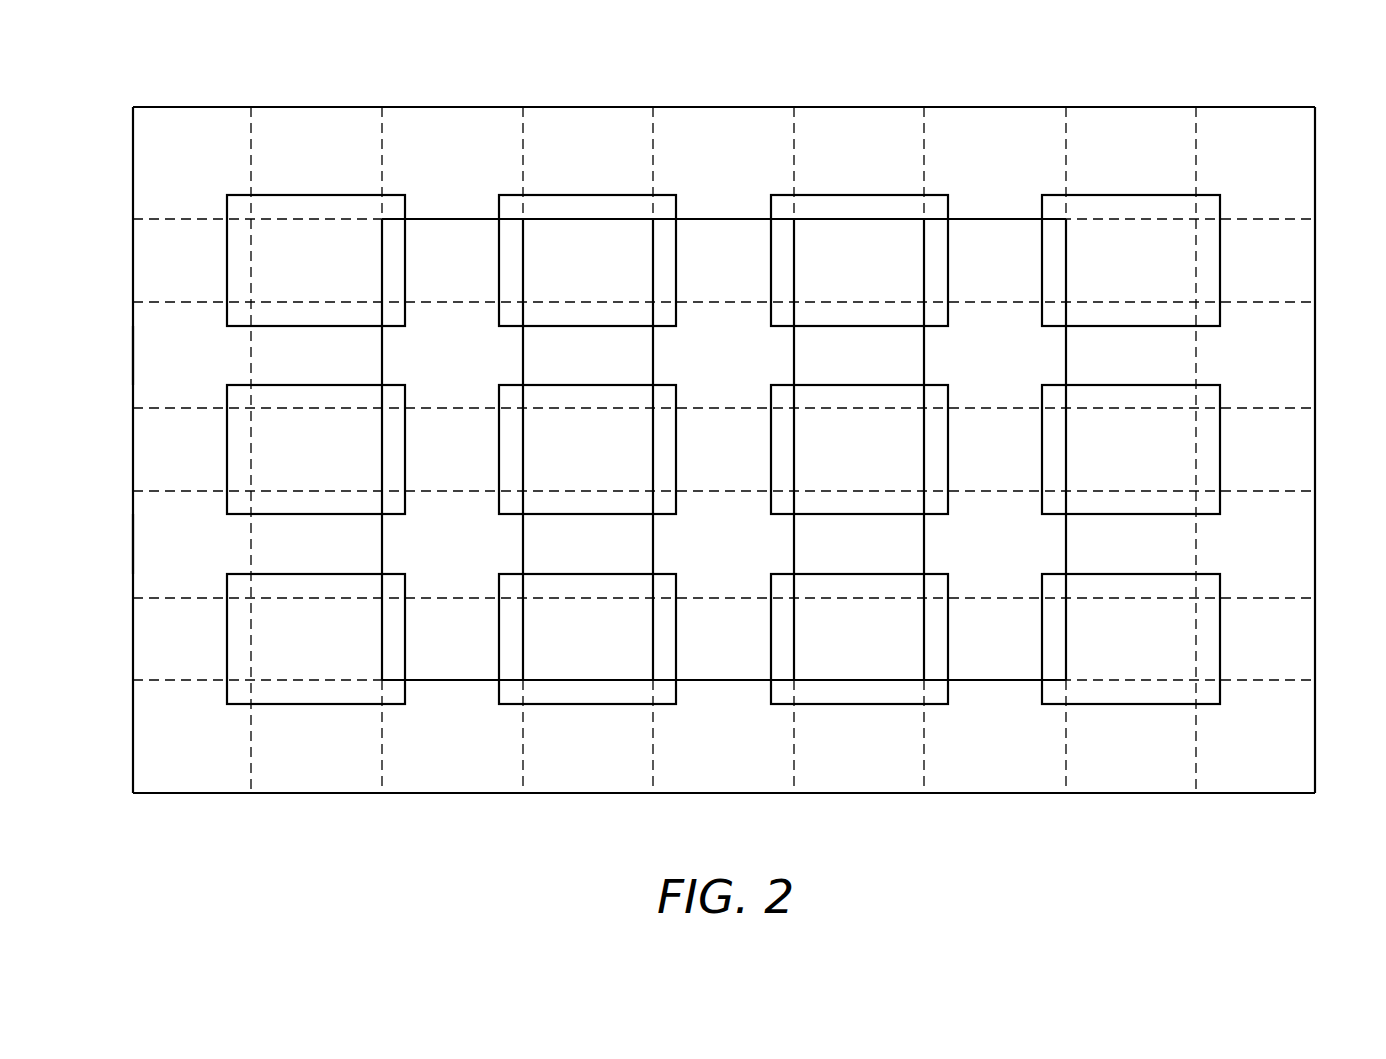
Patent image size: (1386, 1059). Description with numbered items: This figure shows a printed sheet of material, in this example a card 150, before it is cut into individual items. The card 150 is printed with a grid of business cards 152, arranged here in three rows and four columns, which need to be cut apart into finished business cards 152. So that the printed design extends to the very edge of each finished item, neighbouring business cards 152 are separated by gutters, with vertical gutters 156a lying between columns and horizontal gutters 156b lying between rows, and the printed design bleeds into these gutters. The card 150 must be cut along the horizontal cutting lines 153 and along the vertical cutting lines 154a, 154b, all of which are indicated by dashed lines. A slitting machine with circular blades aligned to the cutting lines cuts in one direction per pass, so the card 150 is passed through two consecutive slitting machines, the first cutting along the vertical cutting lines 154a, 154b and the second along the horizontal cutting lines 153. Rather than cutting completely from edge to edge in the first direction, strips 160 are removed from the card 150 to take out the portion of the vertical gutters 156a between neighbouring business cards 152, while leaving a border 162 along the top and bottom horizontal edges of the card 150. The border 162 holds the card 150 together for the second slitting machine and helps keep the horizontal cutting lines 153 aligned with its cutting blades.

The card 150 is at (1203, 56).
The business cards 152 is at (1212, 207).
The horizontal cutting lines 153 is at (1298, 219).
The vertical cutting lines 154a is at (251, 775).
The vertical cutting lines 154b is at (382, 775).
The vertical gutters 156a is at (449, 112).
The horizontal gutters 156b is at (141, 358).
The strips 160 is at (453, 681).
The border 162 is at (141, 166).